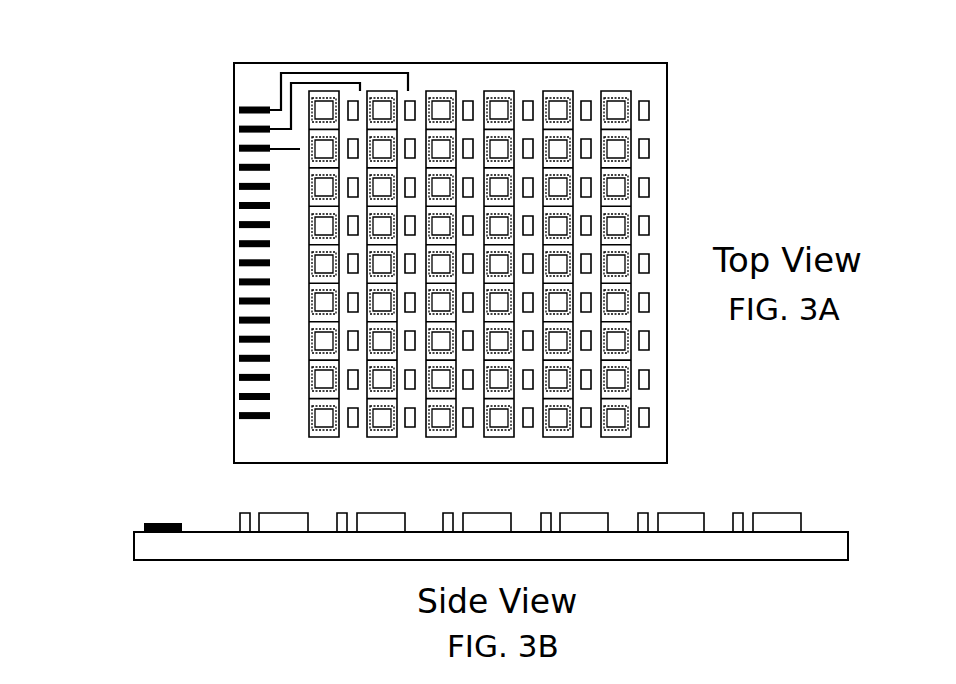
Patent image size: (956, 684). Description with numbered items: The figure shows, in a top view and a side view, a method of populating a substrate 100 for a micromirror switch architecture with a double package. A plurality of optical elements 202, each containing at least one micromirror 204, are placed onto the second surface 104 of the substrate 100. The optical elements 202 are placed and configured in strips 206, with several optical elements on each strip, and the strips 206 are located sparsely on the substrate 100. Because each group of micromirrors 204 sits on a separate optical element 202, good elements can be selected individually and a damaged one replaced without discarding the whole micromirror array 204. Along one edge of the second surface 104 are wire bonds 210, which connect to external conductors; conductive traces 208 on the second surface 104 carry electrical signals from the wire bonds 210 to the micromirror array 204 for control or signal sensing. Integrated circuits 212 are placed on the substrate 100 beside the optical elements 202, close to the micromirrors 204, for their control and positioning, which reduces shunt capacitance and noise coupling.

In FIG. 3A, the substrate 100 is at (494, 60).
In FIG. 3B, the substrate 100 is at (852, 542).
In FIG. 3A, the second surface 104 is at (580, 82).
In FIG. 3A, the optical element 202 is at (628, 95).
In FIG. 3A, the micromirror 204 is at (617, 115).
In FIG. 3A, the strip 206 is at (435, 88).
In FIG. 3B, the strip 206 is at (782, 534).
In FIG. 3A, the conductive trace 208 is at (277, 82).
In FIG. 3A, the wire bond 210 is at (230, 187).
In FIG. 3B, the wire bond 210 is at (163, 523).
In FIG. 3A, the integrated circuit 212 is at (647, 185).
In FIG. 3B, the integrated circuit 212 is at (743, 534).